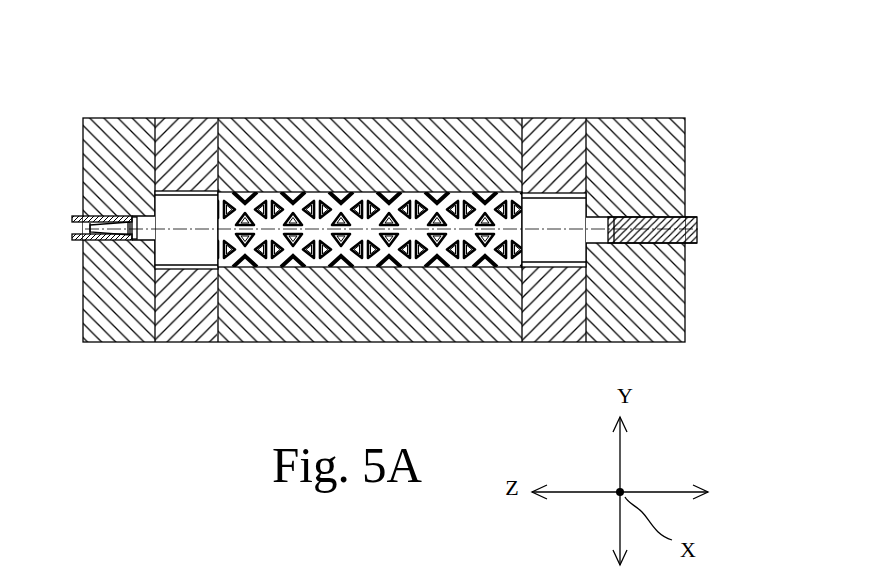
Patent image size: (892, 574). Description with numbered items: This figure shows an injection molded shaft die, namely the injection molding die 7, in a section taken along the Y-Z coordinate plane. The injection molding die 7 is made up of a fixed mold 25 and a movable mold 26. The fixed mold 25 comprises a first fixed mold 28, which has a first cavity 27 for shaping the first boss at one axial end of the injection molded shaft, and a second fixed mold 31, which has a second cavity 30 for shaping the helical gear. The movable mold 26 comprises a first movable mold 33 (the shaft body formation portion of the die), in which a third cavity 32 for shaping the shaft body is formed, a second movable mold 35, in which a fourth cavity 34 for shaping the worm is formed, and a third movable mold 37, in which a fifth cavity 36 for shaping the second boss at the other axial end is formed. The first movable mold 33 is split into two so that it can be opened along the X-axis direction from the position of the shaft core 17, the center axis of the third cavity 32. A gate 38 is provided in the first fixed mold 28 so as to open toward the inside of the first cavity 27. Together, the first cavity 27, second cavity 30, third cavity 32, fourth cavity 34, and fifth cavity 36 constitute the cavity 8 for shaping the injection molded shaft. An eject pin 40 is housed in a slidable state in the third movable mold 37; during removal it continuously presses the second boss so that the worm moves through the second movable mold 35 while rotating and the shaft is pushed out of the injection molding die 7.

The injection molding die 7 is at (398, 172).
The cavity 8 is at (290, 188).
The shaft core 17 is at (560, 243).
The fixed mold 25 is at (150, 172).
The movable mold 26 is at (451, 173).
The first cavity 27 is at (113, 234).
The first fixed mold 28 is at (134, 140).
The second cavity 30 is at (188, 200).
The second fixed mold 31 is at (169, 132).
The third cavity 32 is at (375, 198).
The first movable mold 33 is at (498, 152).
The fourth cavity 34 is at (537, 245).
The second movable mold 35 is at (568, 118).
The fifth cavity 36 is at (610, 217).
The third movable mold 37 is at (635, 196).
The gate 38 is at (105, 240).
The eject pin 40 is at (655, 243).